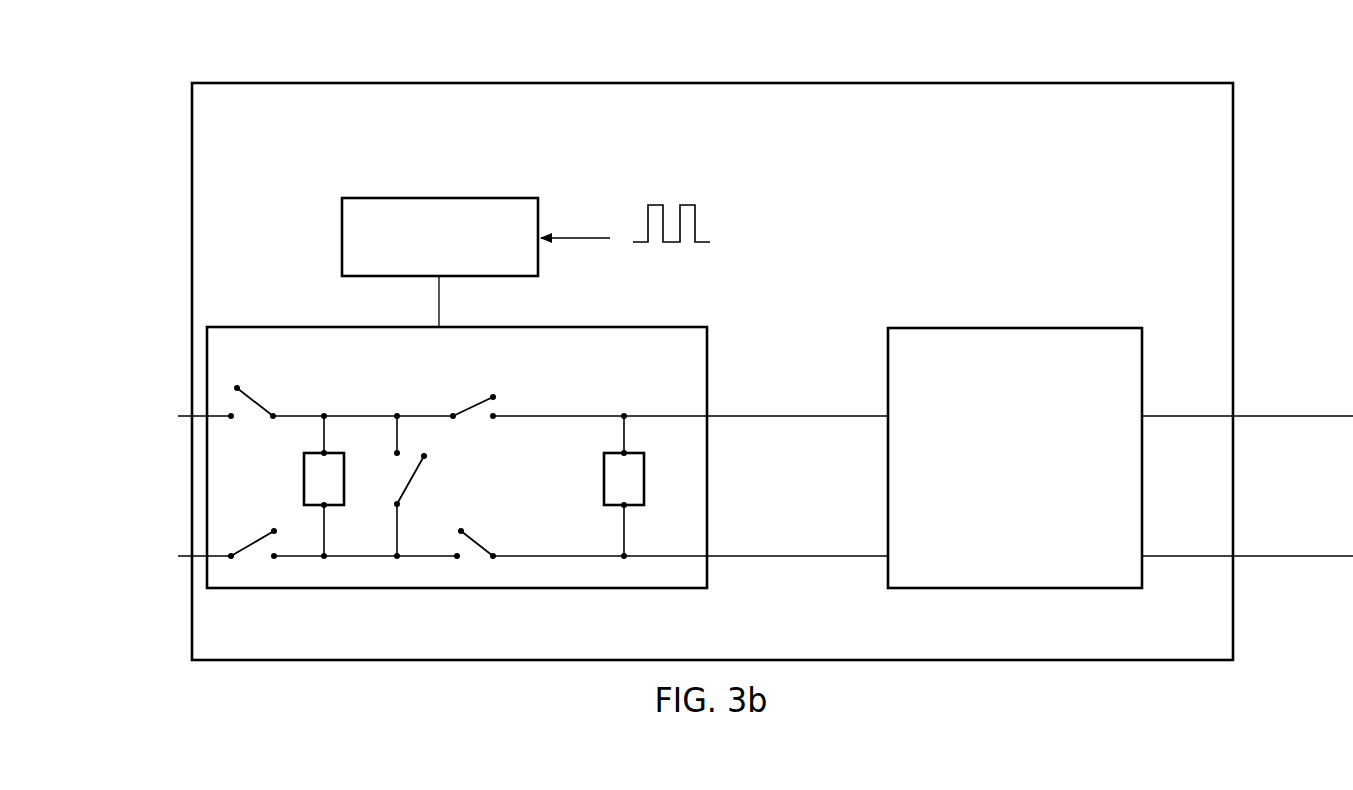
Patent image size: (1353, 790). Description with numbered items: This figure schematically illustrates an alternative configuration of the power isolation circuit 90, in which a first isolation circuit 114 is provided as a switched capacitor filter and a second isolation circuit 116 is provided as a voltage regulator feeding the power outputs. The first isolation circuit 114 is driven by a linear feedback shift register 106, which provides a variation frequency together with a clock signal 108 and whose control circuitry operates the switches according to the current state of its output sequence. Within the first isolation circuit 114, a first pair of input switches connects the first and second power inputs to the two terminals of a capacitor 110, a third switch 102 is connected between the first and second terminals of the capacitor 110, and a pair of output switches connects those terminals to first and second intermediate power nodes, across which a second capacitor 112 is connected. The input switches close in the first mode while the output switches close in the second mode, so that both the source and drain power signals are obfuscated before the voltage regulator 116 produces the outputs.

The power isolation circuit 90 is at (967, 82).
The third switch 102 is at (426, 481).
The linear feedback shift register 106 is at (440, 198).
The clock signal 108 is at (712, 227).
The capacitor 110 is at (296, 486).
The second capacitor 112 is at (601, 478).
The first isolation circuit 114 is at (652, 327).
The second isolation circuit 116 is at (1015, 328).